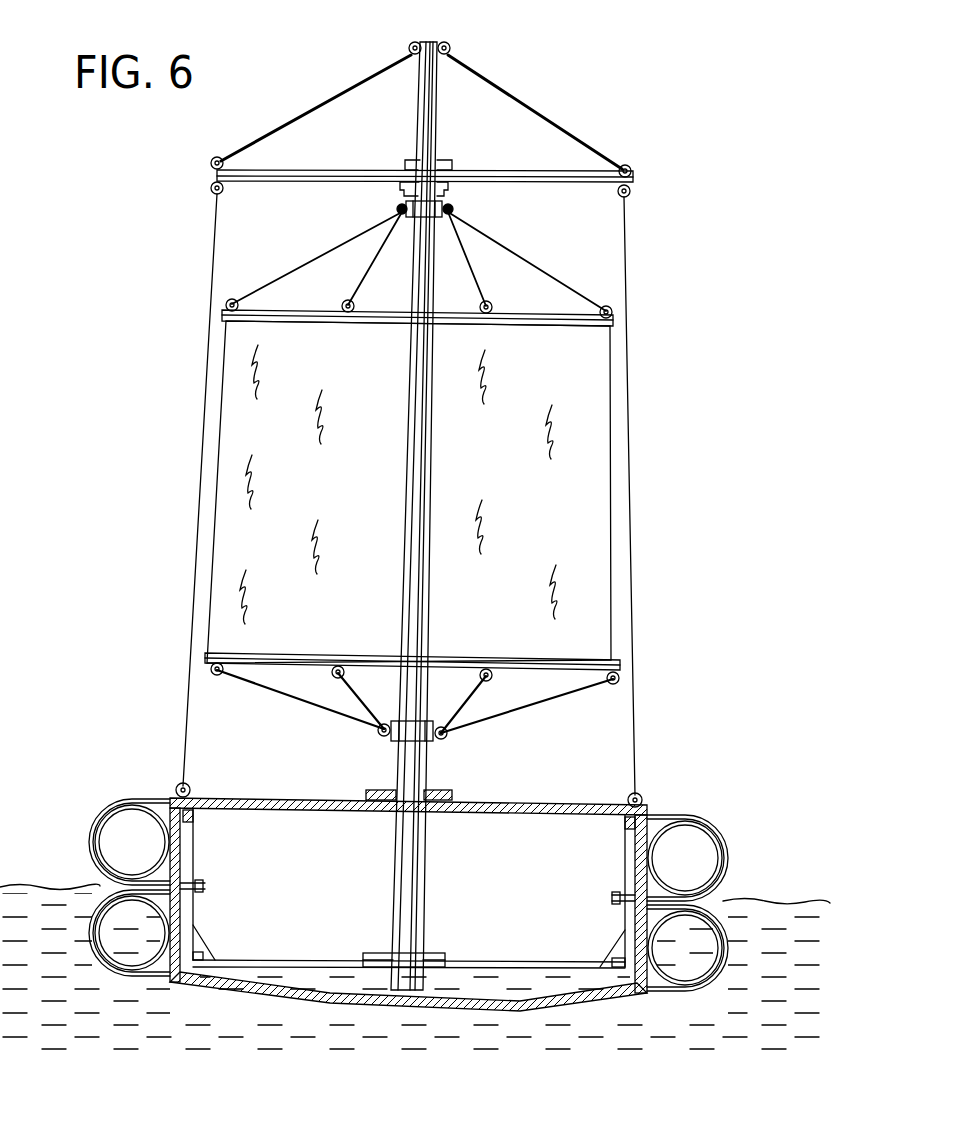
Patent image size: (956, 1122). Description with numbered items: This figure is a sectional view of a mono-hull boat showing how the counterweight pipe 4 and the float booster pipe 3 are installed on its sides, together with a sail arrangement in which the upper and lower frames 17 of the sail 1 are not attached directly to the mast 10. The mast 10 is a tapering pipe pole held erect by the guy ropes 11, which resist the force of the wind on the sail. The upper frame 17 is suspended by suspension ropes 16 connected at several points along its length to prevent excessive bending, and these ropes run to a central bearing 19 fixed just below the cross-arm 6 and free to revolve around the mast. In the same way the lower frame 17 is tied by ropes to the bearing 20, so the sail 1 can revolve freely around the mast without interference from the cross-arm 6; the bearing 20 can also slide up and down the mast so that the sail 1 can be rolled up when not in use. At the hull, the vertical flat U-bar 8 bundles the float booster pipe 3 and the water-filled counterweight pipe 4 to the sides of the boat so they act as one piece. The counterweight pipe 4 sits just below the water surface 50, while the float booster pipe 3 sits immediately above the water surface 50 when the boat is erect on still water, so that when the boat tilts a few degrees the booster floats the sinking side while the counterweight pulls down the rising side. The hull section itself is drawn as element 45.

The sail 1 is at (555, 490).
The float booster pipe 3 is at (130, 840).
The counterweight pipe 4 is at (120, 930).
The cross-arm 6 is at (543, 182).
The vertical flat U-bar 8 is at (155, 803).
The mast 10 is at (428, 128).
The guy ropes 11 is at (590, 148).
The suspension ropes 16 is at (480, 276).
The upper and lower frames of the sail 17 is at (295, 322).
The central bearing 19 is at (418, 186).
The bearing 20 is at (428, 737).
The hull 45 is at (560, 1000).
The water surface 50 is at (770, 895).